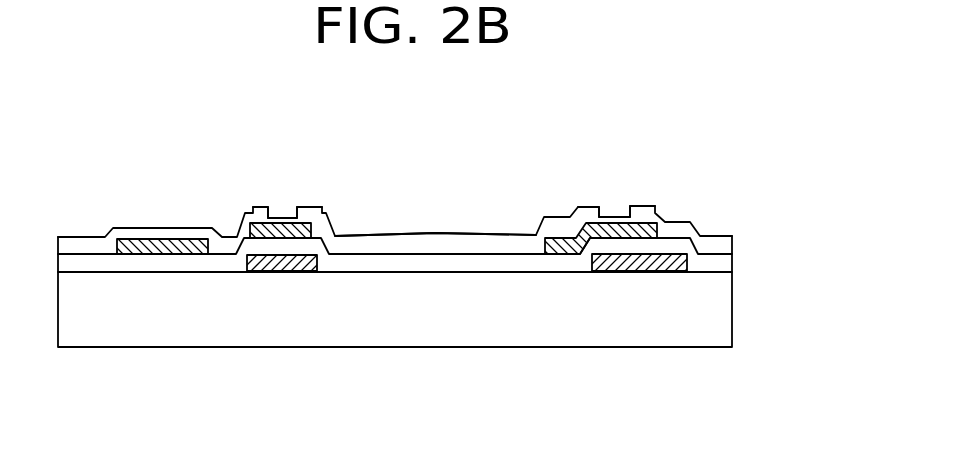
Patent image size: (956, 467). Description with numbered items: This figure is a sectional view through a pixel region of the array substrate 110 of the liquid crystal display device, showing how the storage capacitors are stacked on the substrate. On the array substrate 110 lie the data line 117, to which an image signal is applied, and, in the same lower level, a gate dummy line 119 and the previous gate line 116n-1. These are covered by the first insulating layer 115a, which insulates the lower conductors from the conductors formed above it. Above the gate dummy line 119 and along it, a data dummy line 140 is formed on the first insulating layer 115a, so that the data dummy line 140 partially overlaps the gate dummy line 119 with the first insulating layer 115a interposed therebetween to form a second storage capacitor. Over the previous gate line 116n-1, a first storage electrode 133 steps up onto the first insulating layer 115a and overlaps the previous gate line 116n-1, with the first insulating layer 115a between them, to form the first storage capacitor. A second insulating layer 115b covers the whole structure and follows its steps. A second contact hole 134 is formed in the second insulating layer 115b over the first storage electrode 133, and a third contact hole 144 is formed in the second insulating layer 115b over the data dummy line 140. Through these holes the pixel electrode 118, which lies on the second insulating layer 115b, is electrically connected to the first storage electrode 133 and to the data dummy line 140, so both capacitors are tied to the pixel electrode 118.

The array substrate 110 is at (718, 310).
The first insulating layer 115a is at (718, 263).
The second insulating layer 115b is at (720, 243).
The previous gate line 116n-1 is at (638, 262).
The data line 117 is at (155, 239).
The pixel electrode 118 is at (432, 233).
The gate dummy line 119 is at (268, 272).
The first storage electrode 133 is at (560, 245).
The second contact hole 134 is at (612, 197).
The data dummy line 140 is at (300, 228).
The third contact hole 144 is at (282, 197).